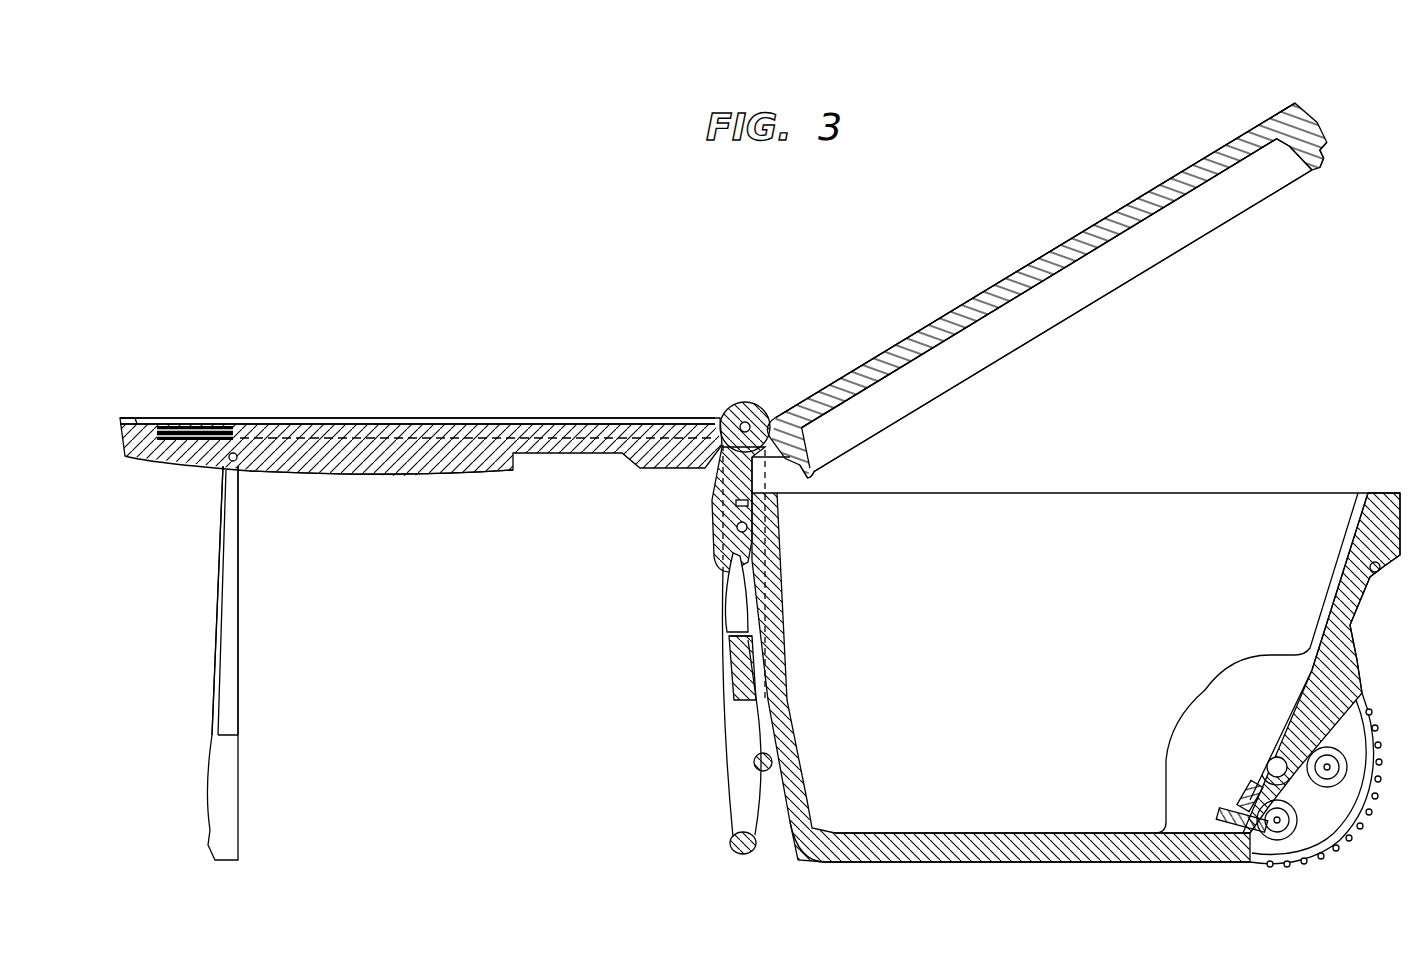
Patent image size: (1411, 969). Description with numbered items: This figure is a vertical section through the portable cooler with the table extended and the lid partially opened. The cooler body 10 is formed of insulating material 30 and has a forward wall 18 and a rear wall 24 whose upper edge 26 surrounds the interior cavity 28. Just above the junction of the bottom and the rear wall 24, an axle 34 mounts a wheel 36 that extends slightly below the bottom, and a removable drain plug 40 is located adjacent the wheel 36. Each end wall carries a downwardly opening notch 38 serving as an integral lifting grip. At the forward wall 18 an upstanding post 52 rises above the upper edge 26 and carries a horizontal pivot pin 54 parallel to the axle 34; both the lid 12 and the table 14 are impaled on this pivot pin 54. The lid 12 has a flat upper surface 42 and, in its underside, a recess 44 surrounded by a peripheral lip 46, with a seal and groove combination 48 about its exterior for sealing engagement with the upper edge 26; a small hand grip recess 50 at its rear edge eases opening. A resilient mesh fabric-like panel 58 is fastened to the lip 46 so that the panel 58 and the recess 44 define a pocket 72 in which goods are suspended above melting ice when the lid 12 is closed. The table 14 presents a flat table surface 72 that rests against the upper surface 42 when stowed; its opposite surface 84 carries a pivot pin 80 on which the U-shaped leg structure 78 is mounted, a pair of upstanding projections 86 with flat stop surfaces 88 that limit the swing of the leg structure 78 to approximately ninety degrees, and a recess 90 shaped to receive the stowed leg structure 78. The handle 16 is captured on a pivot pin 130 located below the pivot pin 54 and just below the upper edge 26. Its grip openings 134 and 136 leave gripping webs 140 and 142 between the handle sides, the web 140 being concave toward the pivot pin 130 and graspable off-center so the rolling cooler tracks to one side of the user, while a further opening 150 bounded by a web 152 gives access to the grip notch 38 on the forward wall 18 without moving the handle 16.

The cooler body 10 is at (1064, 689).
The lid 12 is at (1314, 102).
The table 14 is at (393, 490).
The handle 16 is at (709, 722).
The forward wall 18 is at (773, 850).
The rear wall 24 is at (1352, 683).
The upper edge 26 is at (1172, 493).
The interior cavity 28 is at (1040, 665).
The insulating material 30 is at (832, 863).
The axle 34 is at (1267, 765).
The wheel 36 is at (1328, 845).
The notch 38 is at (735, 585).
The drain plug 40 is at (1258, 830).
The flat upper surface 42 is at (1205, 156).
The recess 44 is at (1075, 265).
The peripheral lip 46 is at (1312, 170).
The seal and groove combination 48 is at (815, 470).
The hand grip recess 50 is at (1327, 156).
The post 52 is at (722, 477).
The pivot pin 54 is at (745, 422).
The fabric-like panel 58 is at (1070, 322).
The pocket 72 is at (425, 420).
The leg structure 78 is at (224, 790).
The pivot pin 80 is at (237, 460).
The surface 84 is at (455, 478).
The projection 86 is at (214, 470).
The stop surface 88 is at (240, 470).
The recess 90 is at (388, 420).
The pivot pin 130 is at (737, 528).
The grip opening 134 is at (750, 803).
The grip opening 136 is at (748, 712).
The gripping web 140 is at (732, 850).
The gripping web 142 is at (748, 770).
The opening 150 is at (735, 630).
The web 152 is at (727, 672).